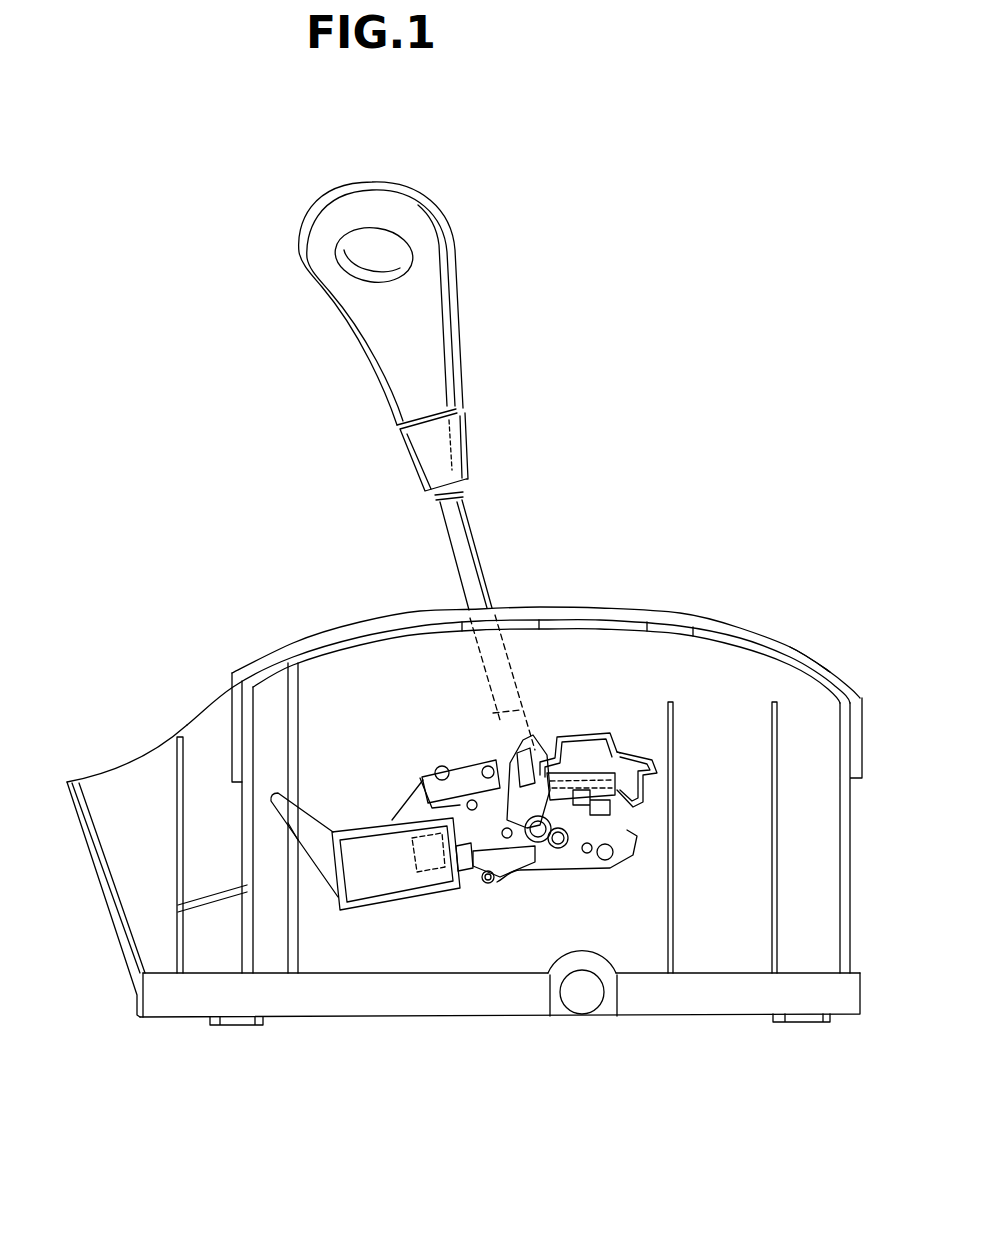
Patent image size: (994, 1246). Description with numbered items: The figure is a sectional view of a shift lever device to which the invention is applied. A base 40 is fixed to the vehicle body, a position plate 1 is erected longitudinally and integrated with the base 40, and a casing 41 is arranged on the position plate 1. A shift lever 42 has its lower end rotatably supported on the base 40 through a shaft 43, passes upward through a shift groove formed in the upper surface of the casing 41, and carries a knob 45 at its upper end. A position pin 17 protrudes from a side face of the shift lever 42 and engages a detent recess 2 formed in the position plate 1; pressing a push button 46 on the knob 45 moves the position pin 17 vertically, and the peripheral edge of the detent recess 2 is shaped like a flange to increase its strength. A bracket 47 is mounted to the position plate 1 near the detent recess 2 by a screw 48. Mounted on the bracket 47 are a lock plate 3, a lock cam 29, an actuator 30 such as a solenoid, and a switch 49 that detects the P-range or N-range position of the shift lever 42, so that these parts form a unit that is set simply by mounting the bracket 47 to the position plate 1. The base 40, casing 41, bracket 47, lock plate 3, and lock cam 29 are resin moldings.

The position plate 1 is at (712, 657).
The detent recess 2 is at (583, 735).
The lock plate 3 is at (630, 750).
The position pin 17 is at (512, 747).
The lock cam 29 is at (535, 780).
The actuator 30 is at (378, 868).
The base 40 is at (737, 990).
The casing 41 is at (812, 663).
The shift lever 42 is at (480, 545).
The shaft 43 is at (585, 1003).
The knob 45 is at (430, 350).
The push button 46 is at (397, 253).
The bracket 47 is at (490, 884).
The screw 48 is at (488, 772).
The switch 49 is at (427, 870).